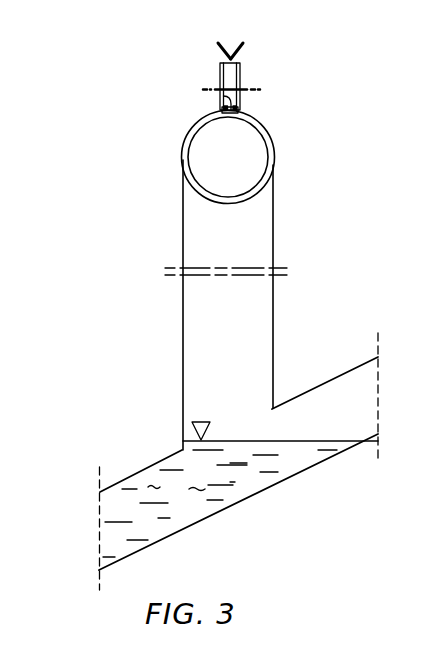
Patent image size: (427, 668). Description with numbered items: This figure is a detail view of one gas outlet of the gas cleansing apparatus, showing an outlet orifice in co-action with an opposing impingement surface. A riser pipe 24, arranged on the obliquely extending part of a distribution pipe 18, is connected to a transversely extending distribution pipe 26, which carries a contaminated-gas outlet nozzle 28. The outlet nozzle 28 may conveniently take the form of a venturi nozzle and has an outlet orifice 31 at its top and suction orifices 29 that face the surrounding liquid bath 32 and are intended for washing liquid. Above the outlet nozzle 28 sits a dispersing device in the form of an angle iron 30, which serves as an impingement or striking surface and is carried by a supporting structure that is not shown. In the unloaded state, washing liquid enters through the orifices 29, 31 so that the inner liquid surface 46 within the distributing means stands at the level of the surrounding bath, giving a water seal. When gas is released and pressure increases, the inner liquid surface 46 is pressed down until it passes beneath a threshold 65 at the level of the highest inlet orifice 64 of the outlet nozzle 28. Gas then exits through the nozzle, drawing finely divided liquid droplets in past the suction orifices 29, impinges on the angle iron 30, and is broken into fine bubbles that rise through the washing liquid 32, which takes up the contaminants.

The distribution pipe 18 is at (158, 462).
The riser pipe 24 is at (260, 228).
The transversely extending distribution pipe 26 is at (260, 168).
The contaminated-gas outlet nozzle 28 is at (240, 79).
The suction orifice 29 is at (222, 95).
The angle iron 30 is at (245, 54).
The outlet orifice 31 is at (225, 63).
The liquid bath 32 is at (240, 499).
The inner liquid surface 46 is at (228, 440).
The inlet orifice 64 is at (257, 417).
The threshold 65 is at (275, 413).